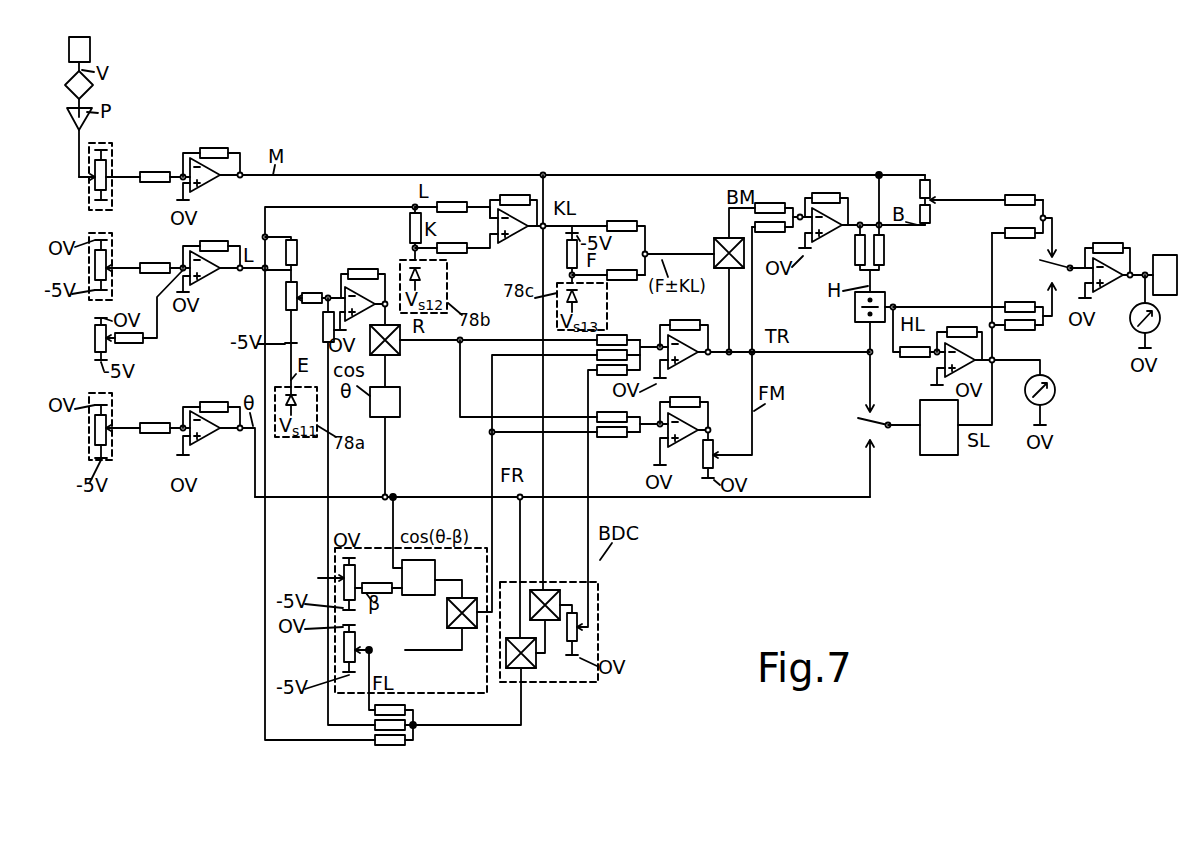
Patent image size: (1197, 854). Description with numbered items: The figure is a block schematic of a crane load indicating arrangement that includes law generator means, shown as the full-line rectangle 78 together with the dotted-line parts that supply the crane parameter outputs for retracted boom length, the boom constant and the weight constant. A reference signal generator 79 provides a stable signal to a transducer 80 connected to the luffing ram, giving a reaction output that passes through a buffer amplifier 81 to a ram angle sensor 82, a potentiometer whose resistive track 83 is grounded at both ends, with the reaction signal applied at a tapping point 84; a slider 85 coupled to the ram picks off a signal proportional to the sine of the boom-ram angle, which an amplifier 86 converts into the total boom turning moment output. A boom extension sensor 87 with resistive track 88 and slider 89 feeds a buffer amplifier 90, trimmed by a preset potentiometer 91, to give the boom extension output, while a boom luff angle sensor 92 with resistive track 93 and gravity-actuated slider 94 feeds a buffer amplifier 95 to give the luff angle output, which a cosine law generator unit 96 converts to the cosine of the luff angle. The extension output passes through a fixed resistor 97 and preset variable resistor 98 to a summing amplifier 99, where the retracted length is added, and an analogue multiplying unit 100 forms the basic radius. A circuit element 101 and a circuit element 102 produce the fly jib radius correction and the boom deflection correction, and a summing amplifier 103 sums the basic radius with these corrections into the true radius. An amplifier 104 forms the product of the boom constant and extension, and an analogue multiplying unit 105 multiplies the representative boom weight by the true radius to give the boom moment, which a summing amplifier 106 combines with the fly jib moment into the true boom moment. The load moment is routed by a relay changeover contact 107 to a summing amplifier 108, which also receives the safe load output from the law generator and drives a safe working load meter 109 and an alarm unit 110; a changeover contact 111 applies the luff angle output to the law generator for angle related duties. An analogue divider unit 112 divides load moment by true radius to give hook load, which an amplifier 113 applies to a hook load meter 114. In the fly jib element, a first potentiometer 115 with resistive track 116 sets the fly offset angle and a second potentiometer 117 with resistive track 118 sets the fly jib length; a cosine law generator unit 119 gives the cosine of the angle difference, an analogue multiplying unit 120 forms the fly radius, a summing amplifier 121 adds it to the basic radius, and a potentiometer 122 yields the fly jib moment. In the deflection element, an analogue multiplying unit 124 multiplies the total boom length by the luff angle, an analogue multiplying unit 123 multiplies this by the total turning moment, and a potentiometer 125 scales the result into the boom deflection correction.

The law generator means 78 is at (940, 455).
The reference signal generator 79 is at (90, 50).
The transducer 80 is at (93, 90).
The buffer amplifier 81 is at (79, 150).
The ram angle sensor 82 is at (88, 177).
The resistive track 83 is at (106, 200).
The tapping point 84 is at (95, 192).
The slider 85 is at (112, 158).
The amplifier 86 is at (208, 188).
The boom extension sensor 87 is at (105, 239).
The resistive track 88 is at (107, 285).
The slider 89 is at (108, 262).
The buffer amplifier 90 is at (210, 284).
The preset potentiometer 91 is at (95, 338).
The boom luff angle sensor 92 is at (104, 405).
The resistive track 93 is at (95, 432).
The slider 94 is at (107, 450).
The buffer amplifier 95 is at (210, 444).
The cosine law generator unit 96 is at (400, 404).
The fixed resistor 97 is at (297, 258).
The preset variable resistor 98 is at (297, 292).
The summing amplifier 99 is at (356, 289).
The analogue multiplying unit 100 is at (400, 343).
The circuit element 101 is at (456, 697).
The circuit element 102 is at (598, 656).
The summing amplifier 103 is at (690, 366).
The amplifier 104 is at (516, 244).
The analogue multiplying unit 105 is at (713, 251).
The summing amplifier 106 is at (830, 243).
The relay changeover contact 107 is at (1038, 262).
The summing amplifier 108 is at (1112, 291).
The safe working load meter 109 is at (1131, 331).
The alarm unit 110 is at (1162, 252).
The changeover contact 111 is at (856, 424).
The analogue divider unit 112 is at (886, 302).
The amplifier 113 is at (935, 367).
The meter 114 is at (1055, 392).
The first potentiometer 115 is at (318, 578).
The resistive track 116 is at (356, 582).
The second potentiometer 117 is at (343, 651).
The resistive track 118 is at (357, 645).
The cosine law generator unit 119 is at (430, 596).
The analogue multiplying unit 120 is at (447, 634).
The summing amplifier 121 is at (658, 443).
The potentiometer 122 is at (714, 448).
The analogue multiplying unit 123 is at (547, 589).
The analogue multiplying unit 124 is at (523, 680).
The potentiometer 125 is at (536, 664).